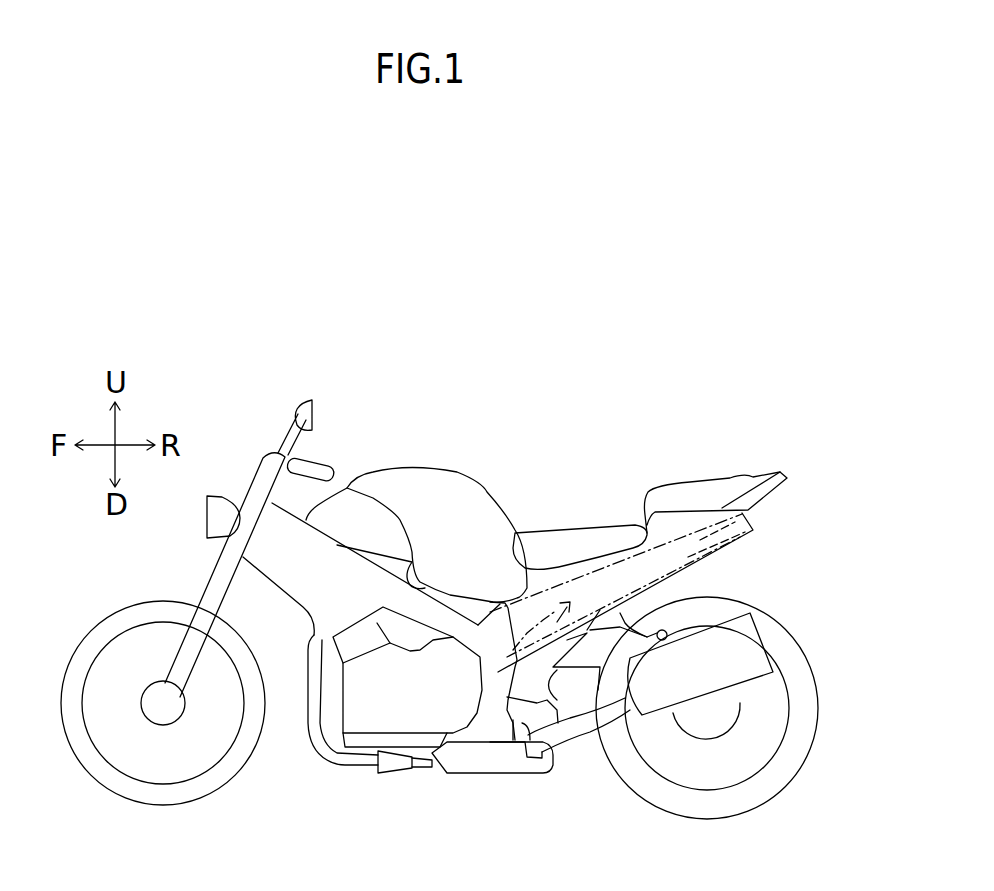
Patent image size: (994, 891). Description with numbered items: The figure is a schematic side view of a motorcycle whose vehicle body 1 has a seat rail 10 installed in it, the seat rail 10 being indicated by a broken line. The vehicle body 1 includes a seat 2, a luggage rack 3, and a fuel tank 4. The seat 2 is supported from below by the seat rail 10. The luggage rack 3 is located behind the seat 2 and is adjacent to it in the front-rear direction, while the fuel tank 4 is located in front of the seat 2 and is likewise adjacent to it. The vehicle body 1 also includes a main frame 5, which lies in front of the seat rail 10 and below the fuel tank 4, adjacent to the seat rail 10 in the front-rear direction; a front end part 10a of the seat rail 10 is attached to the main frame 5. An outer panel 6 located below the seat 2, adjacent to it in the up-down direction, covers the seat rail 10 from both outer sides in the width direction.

The vehicle body 1 is at (284, 414).
The seat 2 is at (577, 537).
The luggage rack 3 is at (713, 492).
The fuel tank 4 is at (420, 474).
The main frame 5 is at (472, 612).
The outer panel 6 is at (723, 552).
The seat rail 10 is at (557, 613).
The front end part 10a is at (513, 650).